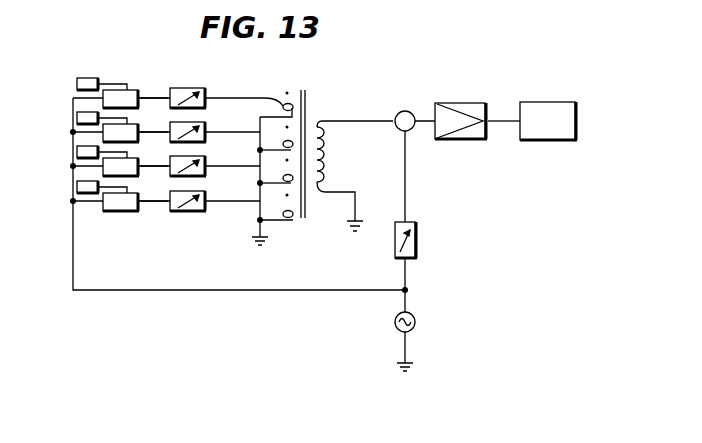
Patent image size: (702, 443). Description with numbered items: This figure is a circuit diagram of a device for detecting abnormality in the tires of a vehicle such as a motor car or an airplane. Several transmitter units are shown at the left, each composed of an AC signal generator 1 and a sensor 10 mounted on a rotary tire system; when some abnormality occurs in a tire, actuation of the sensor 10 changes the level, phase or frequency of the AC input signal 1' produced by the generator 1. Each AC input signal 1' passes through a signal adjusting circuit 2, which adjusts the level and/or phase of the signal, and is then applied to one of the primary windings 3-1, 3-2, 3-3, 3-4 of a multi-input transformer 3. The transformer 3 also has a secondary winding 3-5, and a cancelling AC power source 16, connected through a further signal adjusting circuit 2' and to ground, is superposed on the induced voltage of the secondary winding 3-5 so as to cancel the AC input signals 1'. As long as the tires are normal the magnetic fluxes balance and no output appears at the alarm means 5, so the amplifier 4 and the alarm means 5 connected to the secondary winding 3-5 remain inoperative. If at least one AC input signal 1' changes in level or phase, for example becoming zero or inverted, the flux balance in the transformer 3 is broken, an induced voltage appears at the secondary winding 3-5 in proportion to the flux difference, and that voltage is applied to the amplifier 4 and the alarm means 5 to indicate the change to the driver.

The AC signal generator 1 is at (83, 131).
The sensor 10 is at (127, 90).
The AC input signal 1' is at (155, 133).
The signal adjusting circuit 2 is at (198, 135).
The multi-input transformer 3 is at (294, 133).
The primary winding 3-1 is at (284, 105).
The primary winding 3-2 is at (305, 130).
The primary winding 3-3 is at (283, 180).
The primary winding 3-4 is at (292, 222).
The secondary winding 3-5 is at (331, 152).
The amplifier 4 is at (456, 103).
The alarm means 5 is at (537, 102).
The signal adjusting circuit 2' is at (420, 240).
The cancelling AC power source 16 is at (415, 322).